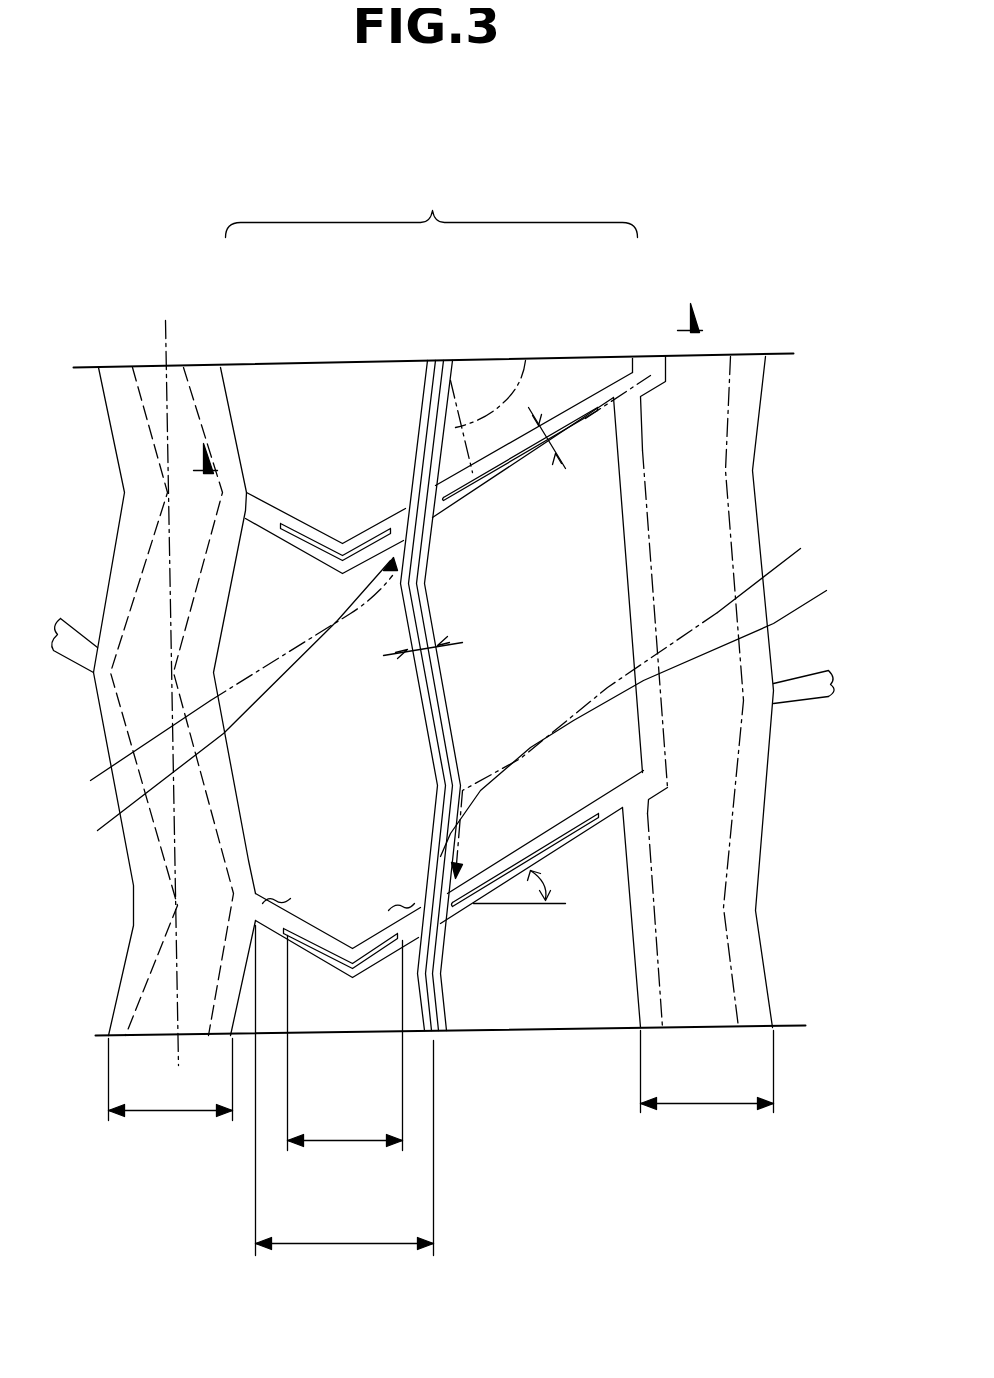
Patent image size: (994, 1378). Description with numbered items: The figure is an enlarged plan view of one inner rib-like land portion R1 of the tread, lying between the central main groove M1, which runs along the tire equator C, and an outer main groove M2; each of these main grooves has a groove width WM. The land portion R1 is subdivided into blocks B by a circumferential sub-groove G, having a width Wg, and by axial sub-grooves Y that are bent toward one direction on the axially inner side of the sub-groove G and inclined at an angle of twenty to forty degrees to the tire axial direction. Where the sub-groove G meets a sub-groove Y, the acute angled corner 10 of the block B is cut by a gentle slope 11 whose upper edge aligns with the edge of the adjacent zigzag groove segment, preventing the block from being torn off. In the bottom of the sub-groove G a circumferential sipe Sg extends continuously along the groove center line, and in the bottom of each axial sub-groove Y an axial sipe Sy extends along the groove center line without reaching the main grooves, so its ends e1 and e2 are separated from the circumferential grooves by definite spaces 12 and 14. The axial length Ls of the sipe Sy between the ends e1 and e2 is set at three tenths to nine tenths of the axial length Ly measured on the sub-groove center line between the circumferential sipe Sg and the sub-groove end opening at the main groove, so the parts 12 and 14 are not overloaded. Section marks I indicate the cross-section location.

The acute angled corner 10 is at (460, 707).
The gentle slope 11 is at (537, 303).
The definite space 12 is at (395, 891).
The definite space 14 is at (281, 884).
The central main groove M1 is at (132, 345).
The outer main groove M2 is at (727, 340).
The tire equator C is at (167, 355).
The circumferential sub-groove G is at (437, 350).
The block B is at (343, 712).
The axial sipe Sy is at (318, 540).
The circumferential sipe Sg is at (445, 692).
The axial sub-groove Y is at (582, 428).
The groove width Wg is at (556, 452).
The inner land portion R1 is at (432, 201).
The section line I is at (443, 384).
The groove width WM is at (170, 1112).
The axial length Ls is at (345, 1142).
The axial length Ly is at (345, 1245).
The sipe end e1 is at (386, 932).
The sipe end e2 is at (303, 924).